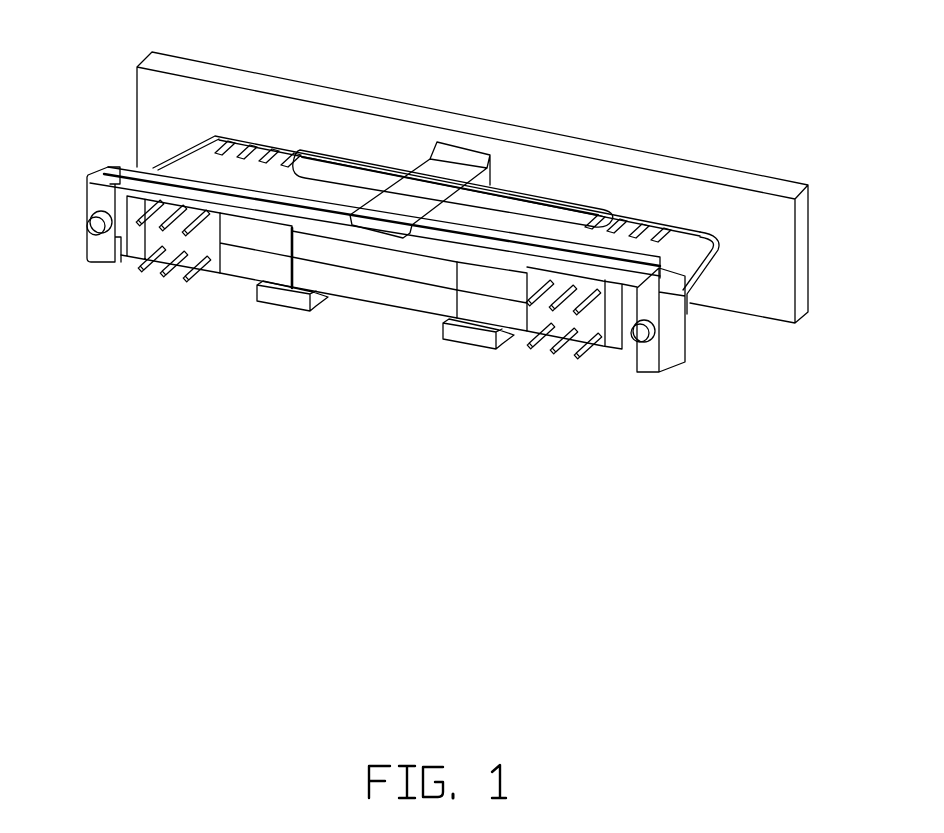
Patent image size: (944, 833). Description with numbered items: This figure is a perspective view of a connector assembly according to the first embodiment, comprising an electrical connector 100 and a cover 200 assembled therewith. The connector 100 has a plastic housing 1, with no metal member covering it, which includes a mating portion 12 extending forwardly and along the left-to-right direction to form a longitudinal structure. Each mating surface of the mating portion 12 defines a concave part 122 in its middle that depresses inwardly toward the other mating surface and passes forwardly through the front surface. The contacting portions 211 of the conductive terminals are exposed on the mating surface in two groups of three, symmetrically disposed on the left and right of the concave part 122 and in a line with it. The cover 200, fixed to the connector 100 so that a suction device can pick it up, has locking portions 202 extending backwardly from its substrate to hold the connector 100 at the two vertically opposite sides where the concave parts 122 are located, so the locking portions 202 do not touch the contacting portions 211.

The housing 1 is at (97, 188).
The electrical connector 100 is at (677, 333).
The mating portion 12 is at (463, 230).
The concave part 122 is at (528, 210).
The locking portion 202 is at (397, 197).
The contacting portion 211 is at (620, 215).
The cover 200 is at (713, 177).